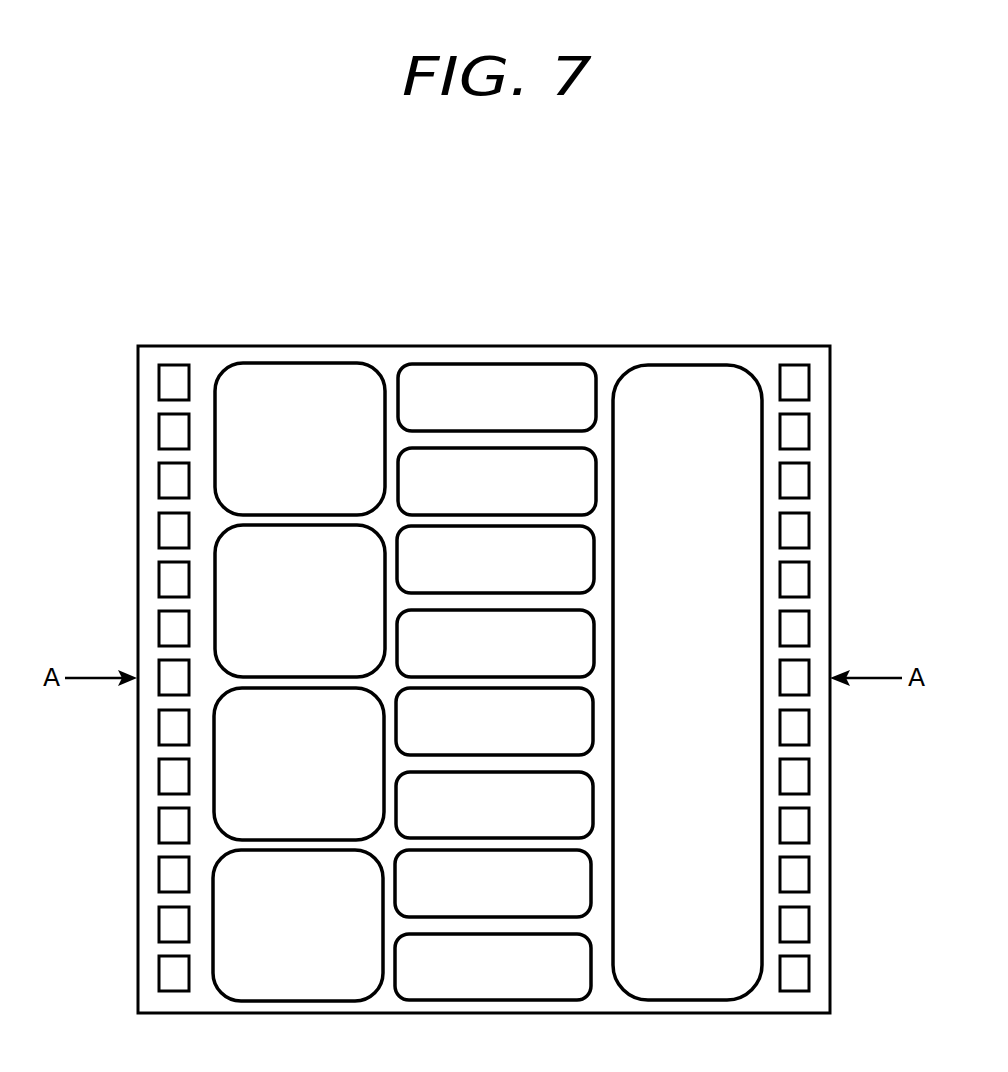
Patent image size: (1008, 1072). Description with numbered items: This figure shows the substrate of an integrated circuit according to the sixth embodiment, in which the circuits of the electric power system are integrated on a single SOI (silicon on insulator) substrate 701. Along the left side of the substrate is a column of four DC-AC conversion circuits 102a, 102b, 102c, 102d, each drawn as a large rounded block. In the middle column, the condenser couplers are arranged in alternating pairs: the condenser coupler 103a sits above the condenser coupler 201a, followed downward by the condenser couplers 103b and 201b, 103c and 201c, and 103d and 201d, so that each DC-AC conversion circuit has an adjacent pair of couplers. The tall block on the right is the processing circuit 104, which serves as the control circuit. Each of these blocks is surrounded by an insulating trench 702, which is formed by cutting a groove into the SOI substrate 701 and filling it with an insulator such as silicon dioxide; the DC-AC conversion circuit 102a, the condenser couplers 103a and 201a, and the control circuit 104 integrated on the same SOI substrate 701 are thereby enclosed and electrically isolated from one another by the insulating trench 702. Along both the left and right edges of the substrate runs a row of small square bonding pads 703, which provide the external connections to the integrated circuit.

The SOI substrate 701 is at (257, 346).
The insulating trench 702 is at (683, 366).
The bonding pad 703 is at (180, 366).
The DC-AC conversion circuit 102a is at (300, 439).
The DC-AC conversion circuit 102b is at (300, 601).
The DC-AC conversion circuit 102c is at (299, 764).
The DC-AC conversion circuit 102d is at (298, 925).
The condenser coupler 103a is at (497, 397).
The condenser coupler 103b is at (495, 559).
The condenser coupler 103c is at (494, 721).
The condenser coupler 103d is at (493, 883).
The condenser coupler 201a is at (497, 481).
The condenser coupler 201b is at (495, 643).
The condenser coupler 201c is at (494, 805).
The condenser coupler 201d is at (493, 967).
The processing circuit 104 is at (687, 682).